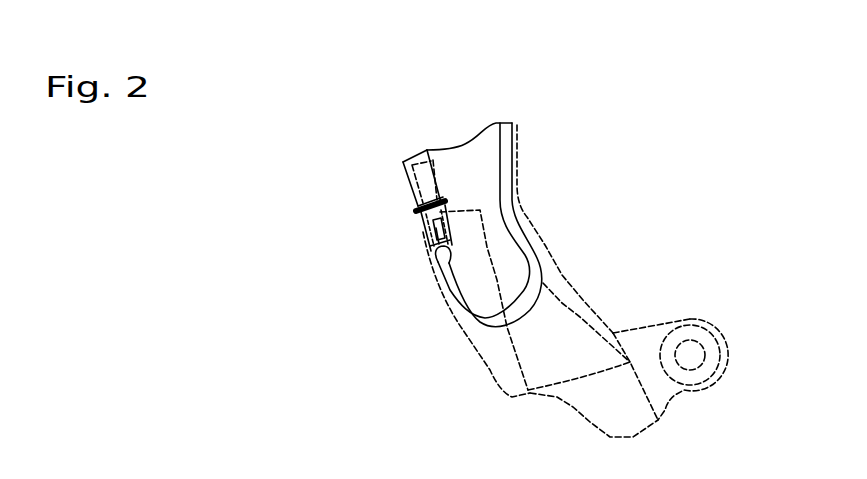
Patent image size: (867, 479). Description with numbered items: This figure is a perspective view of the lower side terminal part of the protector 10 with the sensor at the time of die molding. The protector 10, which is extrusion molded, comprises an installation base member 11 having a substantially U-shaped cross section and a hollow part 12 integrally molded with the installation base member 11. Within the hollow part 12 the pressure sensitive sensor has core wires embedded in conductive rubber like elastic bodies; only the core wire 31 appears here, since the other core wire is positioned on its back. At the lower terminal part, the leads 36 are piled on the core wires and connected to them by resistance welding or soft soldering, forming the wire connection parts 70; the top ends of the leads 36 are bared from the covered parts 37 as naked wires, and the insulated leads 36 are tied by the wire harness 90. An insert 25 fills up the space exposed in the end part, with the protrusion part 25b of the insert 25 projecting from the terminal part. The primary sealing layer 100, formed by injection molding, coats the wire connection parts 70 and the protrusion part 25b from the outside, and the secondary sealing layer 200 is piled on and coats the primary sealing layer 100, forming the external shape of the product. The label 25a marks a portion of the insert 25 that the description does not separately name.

The protector with the sensor 10 is at (386, 168).
The installation base member 11 is at (472, 153).
The hollow part 12 is at (413, 183).
The insert 25 is at (420, 222).
The cable first end 25a is at (433, 160).
The protrusion part of the insert 25b is at (420, 216).
The core wire 31 is at (418, 208).
The leads 36 is at (452, 212).
The covered parts 37 is at (430, 242).
The wire connection part 70 is at (447, 205).
The wire harness 90 is at (505, 192).
The primary sealing layer 100 is at (423, 235).
The secondary sealing layer 200 is at (487, 370).